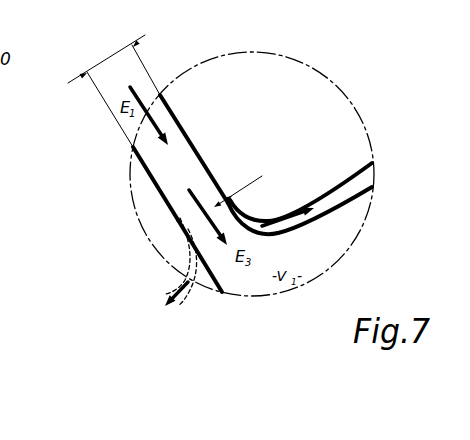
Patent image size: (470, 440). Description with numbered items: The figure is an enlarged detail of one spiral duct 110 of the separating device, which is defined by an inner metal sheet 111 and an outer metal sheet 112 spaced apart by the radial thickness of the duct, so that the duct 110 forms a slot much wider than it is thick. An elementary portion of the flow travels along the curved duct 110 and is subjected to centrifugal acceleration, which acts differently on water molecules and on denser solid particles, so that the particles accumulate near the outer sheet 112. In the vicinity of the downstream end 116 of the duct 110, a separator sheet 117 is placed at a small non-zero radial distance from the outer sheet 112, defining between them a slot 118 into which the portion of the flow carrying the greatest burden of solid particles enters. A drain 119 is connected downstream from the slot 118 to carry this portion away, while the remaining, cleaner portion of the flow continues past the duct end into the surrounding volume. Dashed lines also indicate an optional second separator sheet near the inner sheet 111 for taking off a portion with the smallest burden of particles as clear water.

The duct 110 is at (155, 158).
The inner metal sheet 111 is at (170, 208).
The outer metal sheet 112 is at (176, 116).
The downstream end 116 is at (163, 224).
The separator sheet 117 is at (249, 228).
The slot 118 is at (229, 200).
The drain 119 is at (365, 183).